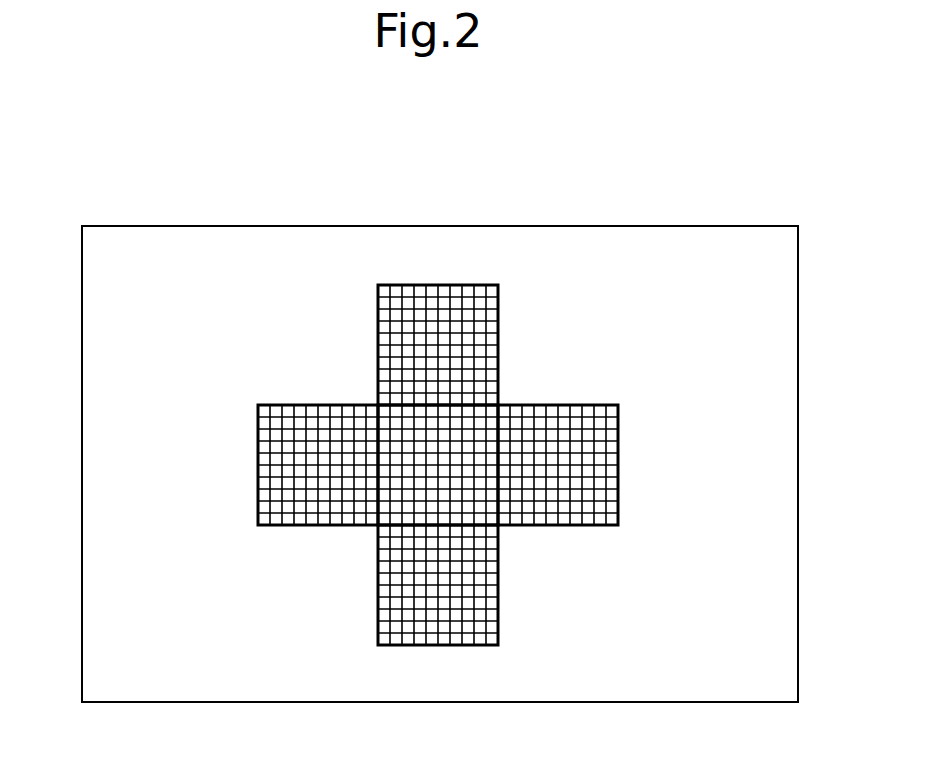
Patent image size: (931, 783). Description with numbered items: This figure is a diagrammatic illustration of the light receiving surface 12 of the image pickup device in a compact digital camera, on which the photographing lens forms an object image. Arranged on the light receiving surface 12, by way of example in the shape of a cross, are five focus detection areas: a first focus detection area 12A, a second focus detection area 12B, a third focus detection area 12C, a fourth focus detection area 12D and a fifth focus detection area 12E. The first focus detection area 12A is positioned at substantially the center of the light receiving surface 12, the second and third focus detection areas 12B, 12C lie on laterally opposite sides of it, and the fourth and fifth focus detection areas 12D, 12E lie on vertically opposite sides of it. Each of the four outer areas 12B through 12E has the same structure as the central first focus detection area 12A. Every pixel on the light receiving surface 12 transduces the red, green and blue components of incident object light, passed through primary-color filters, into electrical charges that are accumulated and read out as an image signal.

The light receiving surface 12 is at (492, 226).
The first focus detection area 12A is at (438, 460).
The second focus detection area 12B is at (318, 448).
The third focus detection area 12C is at (558, 460).
The fourth focus detection area 12D is at (442, 355).
The fifth focus detection area 12E is at (440, 580).